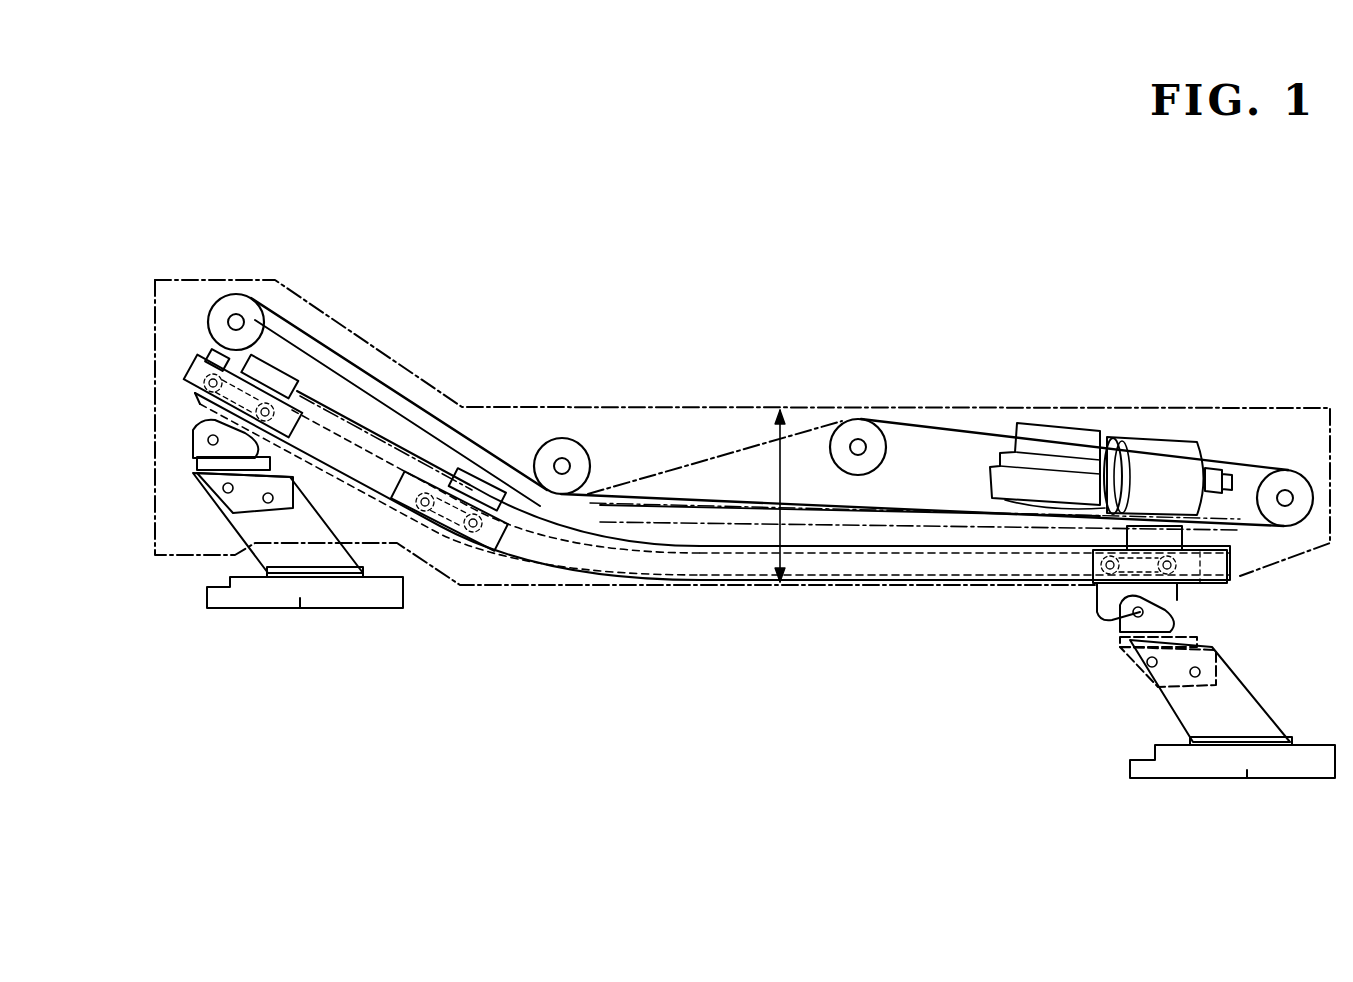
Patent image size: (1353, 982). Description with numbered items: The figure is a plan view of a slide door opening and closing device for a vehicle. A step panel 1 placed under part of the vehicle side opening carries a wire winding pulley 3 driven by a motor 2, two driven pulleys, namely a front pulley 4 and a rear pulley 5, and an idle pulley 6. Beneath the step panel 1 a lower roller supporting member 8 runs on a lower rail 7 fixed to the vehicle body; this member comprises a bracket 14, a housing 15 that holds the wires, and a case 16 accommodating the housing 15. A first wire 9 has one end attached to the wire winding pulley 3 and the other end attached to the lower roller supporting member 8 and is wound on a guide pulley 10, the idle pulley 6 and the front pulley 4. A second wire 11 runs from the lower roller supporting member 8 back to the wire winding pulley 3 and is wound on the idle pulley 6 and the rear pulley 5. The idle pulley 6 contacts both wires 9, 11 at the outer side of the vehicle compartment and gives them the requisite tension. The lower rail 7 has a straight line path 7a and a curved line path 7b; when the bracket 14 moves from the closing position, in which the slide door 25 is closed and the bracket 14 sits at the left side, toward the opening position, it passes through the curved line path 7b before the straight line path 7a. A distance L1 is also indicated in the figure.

The step panel 1 is at (700, 407).
The motor 2 is at (1163, 440).
The wire winding pulley 3 is at (1035, 425).
The front pulley 4 is at (244, 295).
The rear pulley 5 is at (1290, 468).
The idle pulley 6 is at (562, 437).
The lower rail 7 is at (712, 538).
The straight line path 7a is at (742, 584).
The curved line path 7b is at (568, 578).
The lower roller supporting member 8 is at (302, 464).
The first wire 9 is at (358, 365).
The guide pulley 10 is at (858, 419).
The second wire 11 is at (418, 450).
The bracket 14 is at (195, 432).
The housing 15 is at (690, 474).
The case 16 is at (756, 429).
The slide door 25 is at (298, 612).
The distance L1 is at (782, 496).